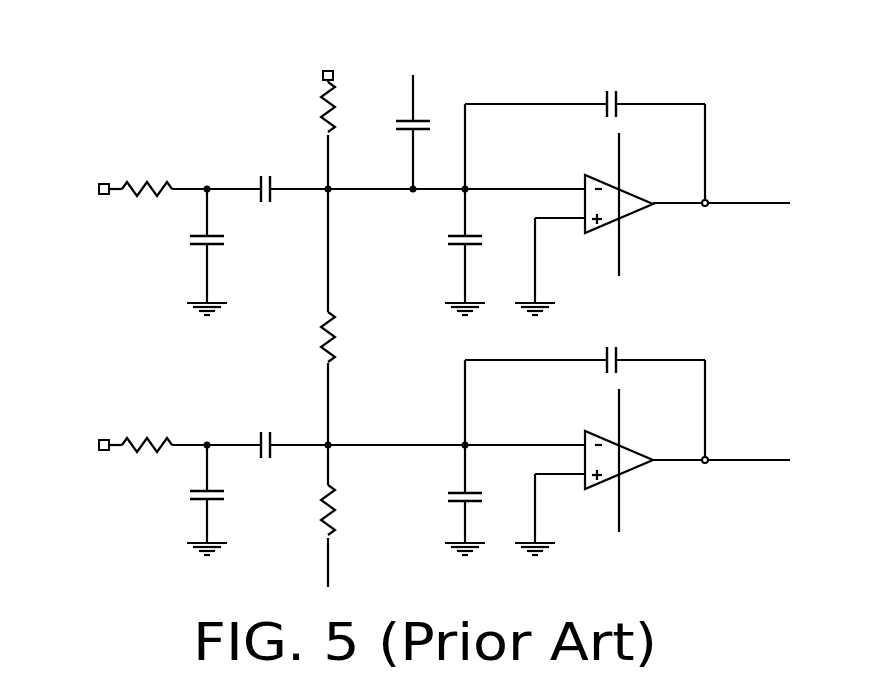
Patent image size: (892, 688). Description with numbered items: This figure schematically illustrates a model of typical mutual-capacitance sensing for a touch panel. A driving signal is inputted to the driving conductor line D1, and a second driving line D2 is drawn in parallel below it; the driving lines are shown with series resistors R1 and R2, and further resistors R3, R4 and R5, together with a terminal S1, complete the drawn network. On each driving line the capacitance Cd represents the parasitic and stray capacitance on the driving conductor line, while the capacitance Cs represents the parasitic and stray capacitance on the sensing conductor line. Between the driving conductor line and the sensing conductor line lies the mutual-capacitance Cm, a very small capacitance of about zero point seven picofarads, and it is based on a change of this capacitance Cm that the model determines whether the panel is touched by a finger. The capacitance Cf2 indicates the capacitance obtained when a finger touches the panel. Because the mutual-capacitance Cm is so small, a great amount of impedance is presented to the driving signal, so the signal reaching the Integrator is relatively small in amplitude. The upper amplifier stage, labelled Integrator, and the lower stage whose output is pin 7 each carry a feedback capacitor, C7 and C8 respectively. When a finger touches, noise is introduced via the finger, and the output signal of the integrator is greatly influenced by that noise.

The driving conductor line D1 is at (83, 179).
The second drive input terminal D2 is at (81, 434).
The first resistor R1 is at (161, 191).
The second resistor R2 is at (161, 447).
The third resistor R3 is at (333, 338).
The fourth resistor R4 is at (334, 508).
The fifth resistor R5 is at (332, 116).
The switch terminal S1 is at (317, 61).
The capacitance Cd is at (224, 372).
The mutual-capacitance Cm is at (269, 303).
The capacitance Cs is at (482, 372).
The capacitance Cf2 is at (421, 97).
The first integrator feedback capacitor C7 is at (585, 134).
The second integrator feedback capacitor C8 is at (585, 391).
The integrator Integrator is at (640, 209).
The second integrator output 7 is at (652, 472).